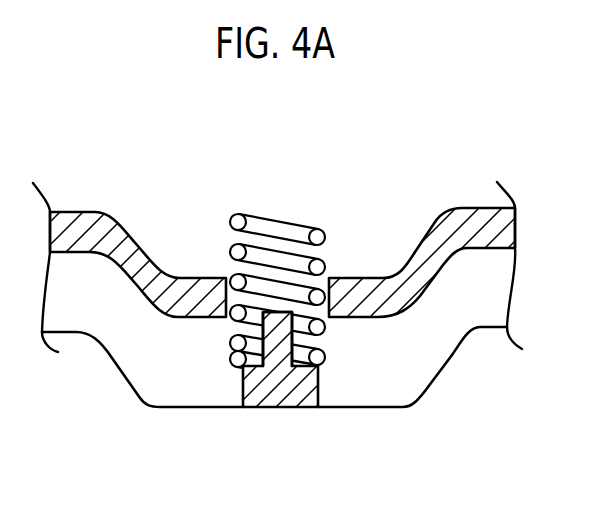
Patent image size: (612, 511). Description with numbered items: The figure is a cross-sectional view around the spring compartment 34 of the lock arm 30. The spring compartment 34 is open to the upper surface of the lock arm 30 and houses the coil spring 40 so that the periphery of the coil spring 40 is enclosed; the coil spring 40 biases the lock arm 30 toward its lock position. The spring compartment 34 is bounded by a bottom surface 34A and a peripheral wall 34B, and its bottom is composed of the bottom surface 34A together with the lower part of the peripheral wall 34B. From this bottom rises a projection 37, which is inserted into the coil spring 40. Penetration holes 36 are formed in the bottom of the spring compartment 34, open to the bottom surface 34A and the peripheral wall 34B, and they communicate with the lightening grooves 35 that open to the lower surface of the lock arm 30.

The lock arm 30 is at (306, 244).
The spring compartment 34 is at (280, 324).
The bottom surface 34A is at (258, 354).
The peripheral wall 34B is at (334, 278).
The lightening grooves 35 is at (127, 362).
The penetration holes 36 is at (223, 338).
The projection 37 is at (293, 340).
The coil spring 40 is at (288, 221).